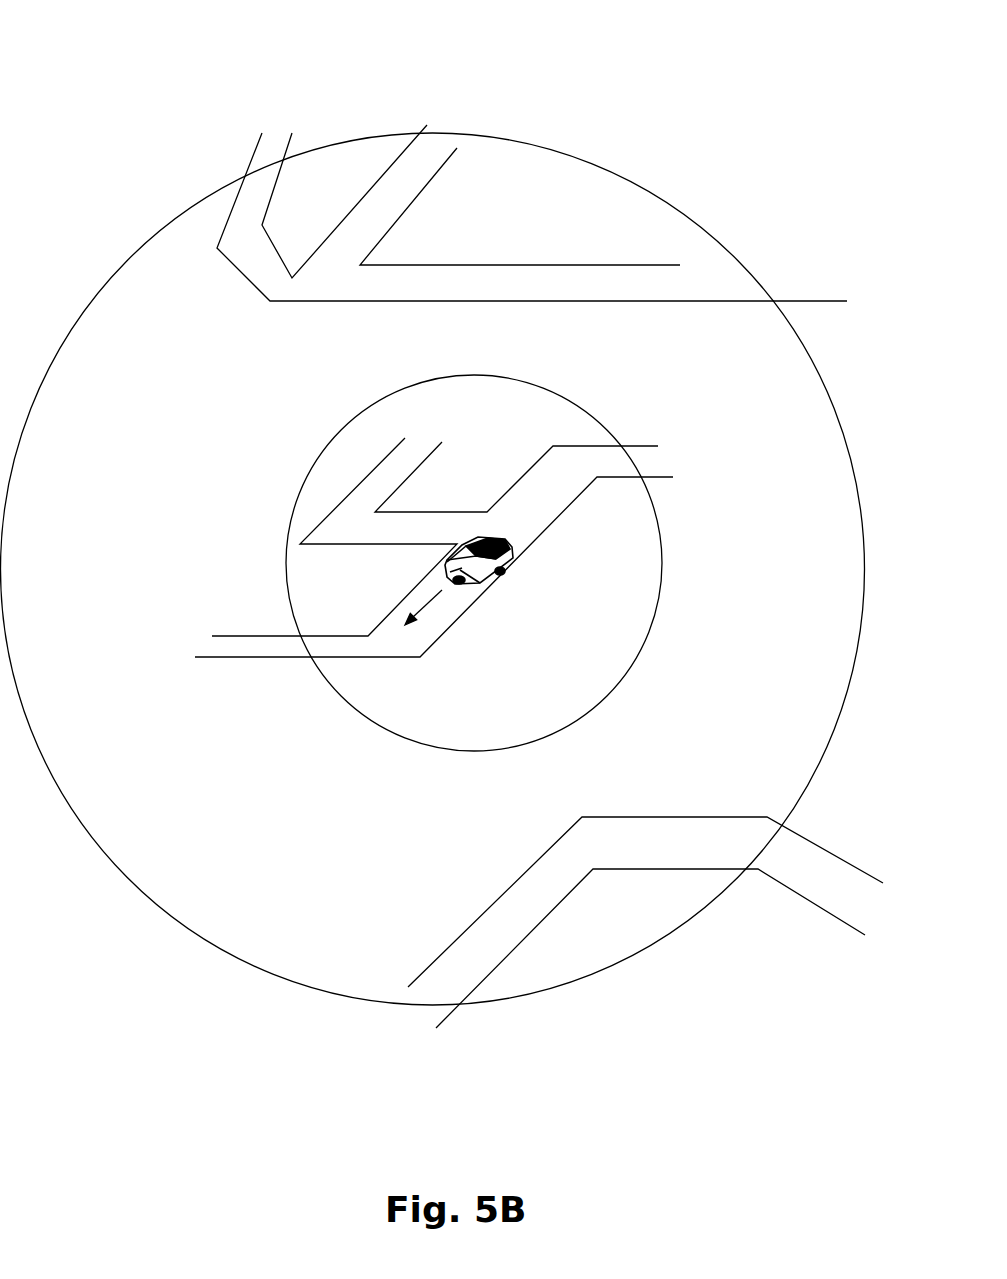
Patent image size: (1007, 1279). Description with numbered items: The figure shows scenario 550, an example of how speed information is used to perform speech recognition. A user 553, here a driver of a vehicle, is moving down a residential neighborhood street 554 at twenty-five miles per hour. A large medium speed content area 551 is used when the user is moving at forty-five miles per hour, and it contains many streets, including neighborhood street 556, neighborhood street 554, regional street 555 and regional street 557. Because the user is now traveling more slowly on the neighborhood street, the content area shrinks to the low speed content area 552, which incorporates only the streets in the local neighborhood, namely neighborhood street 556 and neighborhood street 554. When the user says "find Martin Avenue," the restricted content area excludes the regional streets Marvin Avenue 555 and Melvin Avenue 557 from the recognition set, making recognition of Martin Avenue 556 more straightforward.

The scenario 550 is at (465, 27).
The medium speed content area 551 is at (194, 208).
The low speed content area 552 is at (298, 494).
The user 553 is at (503, 557).
The neighborhood street 554 is at (524, 498).
The regional street 555 is at (427, 153).
The neighborhood street 556 is at (336, 531).
The regional street 557 is at (563, 860).